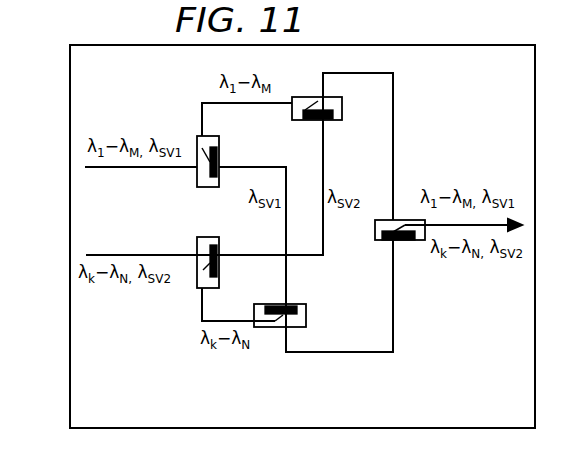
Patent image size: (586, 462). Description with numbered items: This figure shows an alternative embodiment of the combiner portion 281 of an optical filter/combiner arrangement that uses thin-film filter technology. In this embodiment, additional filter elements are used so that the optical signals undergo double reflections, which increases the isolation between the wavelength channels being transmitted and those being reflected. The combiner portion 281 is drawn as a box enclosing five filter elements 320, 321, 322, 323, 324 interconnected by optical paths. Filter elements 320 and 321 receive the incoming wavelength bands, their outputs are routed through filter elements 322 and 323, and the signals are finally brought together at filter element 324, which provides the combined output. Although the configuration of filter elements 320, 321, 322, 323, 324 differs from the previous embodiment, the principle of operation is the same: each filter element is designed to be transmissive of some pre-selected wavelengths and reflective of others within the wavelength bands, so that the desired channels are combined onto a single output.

The combiner portion 281 is at (69, 371).
The filter element 320 is at (197, 180).
The filter element 321 is at (197, 284).
The filter element 322 is at (303, 121).
The filter element 323 is at (275, 328).
The filter element 324 is at (403, 242).